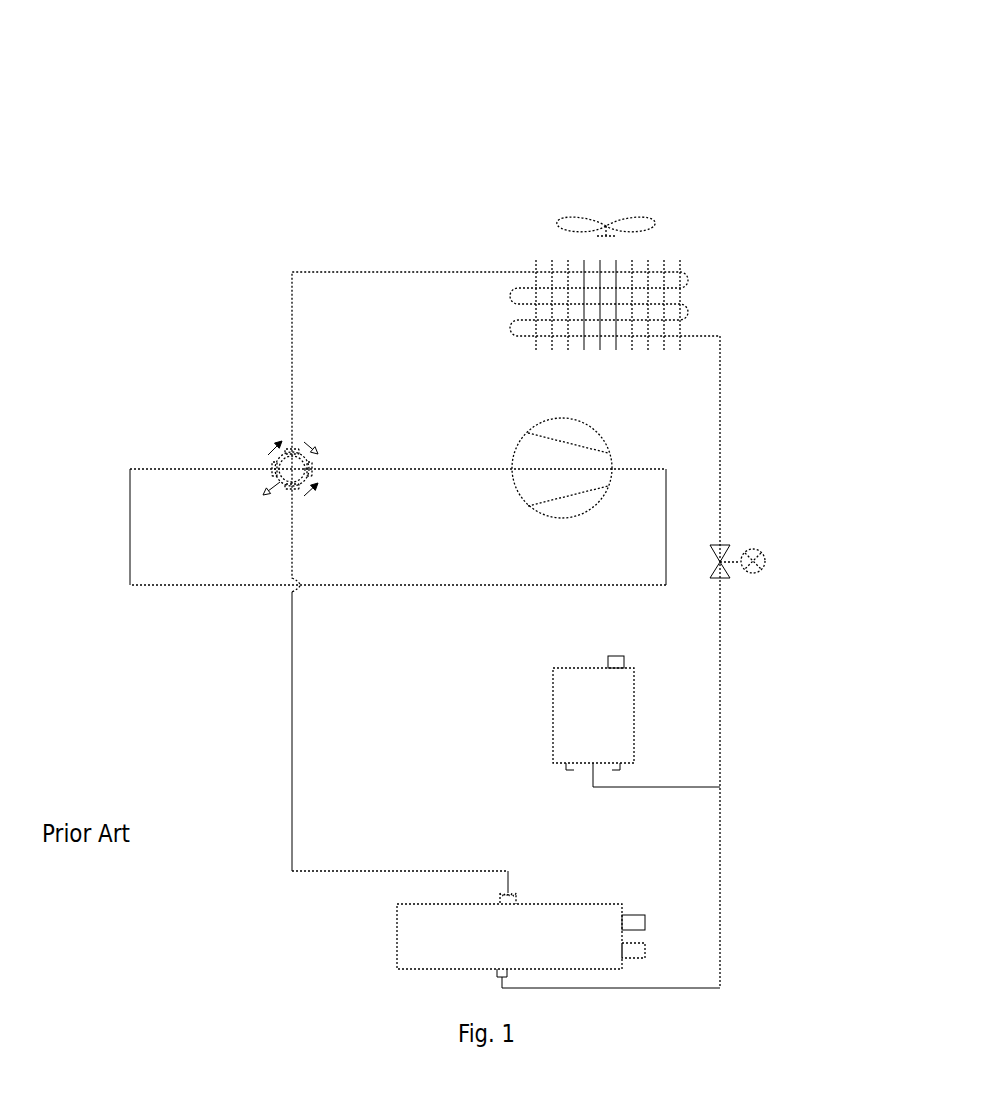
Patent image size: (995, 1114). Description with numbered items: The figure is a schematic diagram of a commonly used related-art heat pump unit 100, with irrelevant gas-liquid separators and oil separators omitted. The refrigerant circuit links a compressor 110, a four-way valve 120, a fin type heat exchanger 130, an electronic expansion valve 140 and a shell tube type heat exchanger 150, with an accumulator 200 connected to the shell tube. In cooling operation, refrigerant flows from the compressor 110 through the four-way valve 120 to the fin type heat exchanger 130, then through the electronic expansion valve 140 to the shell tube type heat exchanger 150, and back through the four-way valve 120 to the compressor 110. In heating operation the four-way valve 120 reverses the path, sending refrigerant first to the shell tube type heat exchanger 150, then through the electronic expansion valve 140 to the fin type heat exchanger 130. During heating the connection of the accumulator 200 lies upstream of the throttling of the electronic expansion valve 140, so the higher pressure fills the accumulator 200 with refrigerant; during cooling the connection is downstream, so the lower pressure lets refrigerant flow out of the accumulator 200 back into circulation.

The heat pump unit 100 is at (440, 130).
The compressor 110 is at (570, 430).
The four-way valve 120 is at (297, 477).
The fin type heat exchanger 130 is at (632, 288).
The electronic expansion valve 140 is at (725, 549).
The shell tube type heat exchanger 150 is at (578, 919).
The accumulator 200 is at (588, 693).